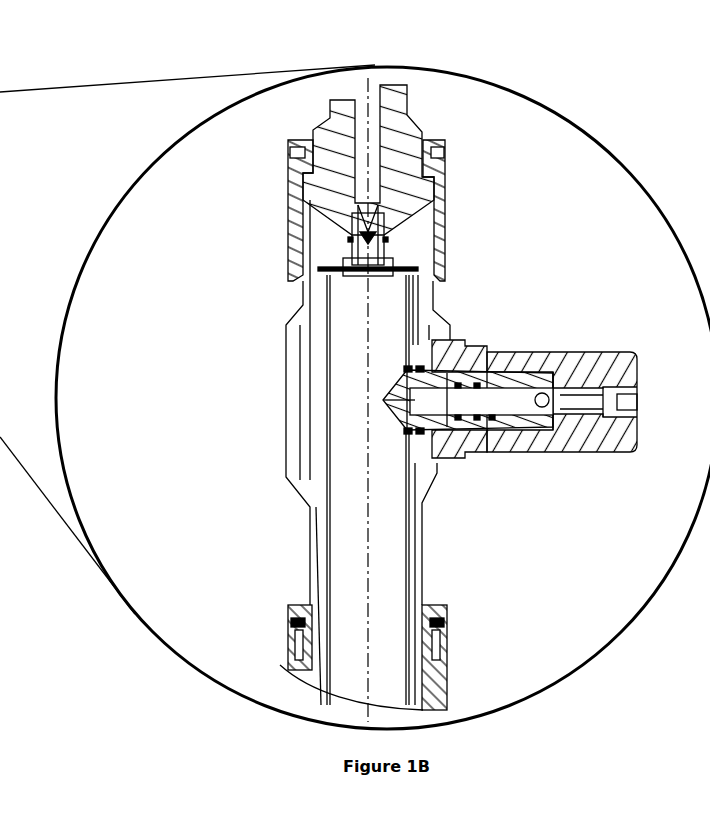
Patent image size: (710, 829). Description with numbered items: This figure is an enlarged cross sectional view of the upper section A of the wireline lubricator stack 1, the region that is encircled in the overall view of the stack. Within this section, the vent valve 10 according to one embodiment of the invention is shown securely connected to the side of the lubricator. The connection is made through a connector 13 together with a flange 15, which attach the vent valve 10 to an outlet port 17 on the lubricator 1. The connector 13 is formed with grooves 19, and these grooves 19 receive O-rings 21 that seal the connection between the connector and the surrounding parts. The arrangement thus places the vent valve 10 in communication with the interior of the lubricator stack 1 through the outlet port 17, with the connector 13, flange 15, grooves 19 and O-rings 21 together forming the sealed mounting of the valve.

The upper section A is at (587, 133).
The wireline lubricator stack 1 is at (422, 558).
The vent valve 10 is at (430, 372).
The connector 13 is at (413, 367).
The flange 15 is at (468, 338).
The outlet port 17 is at (383, 402).
The grooves 19 is at (408, 434).
The O-rings 21 is at (470, 488).